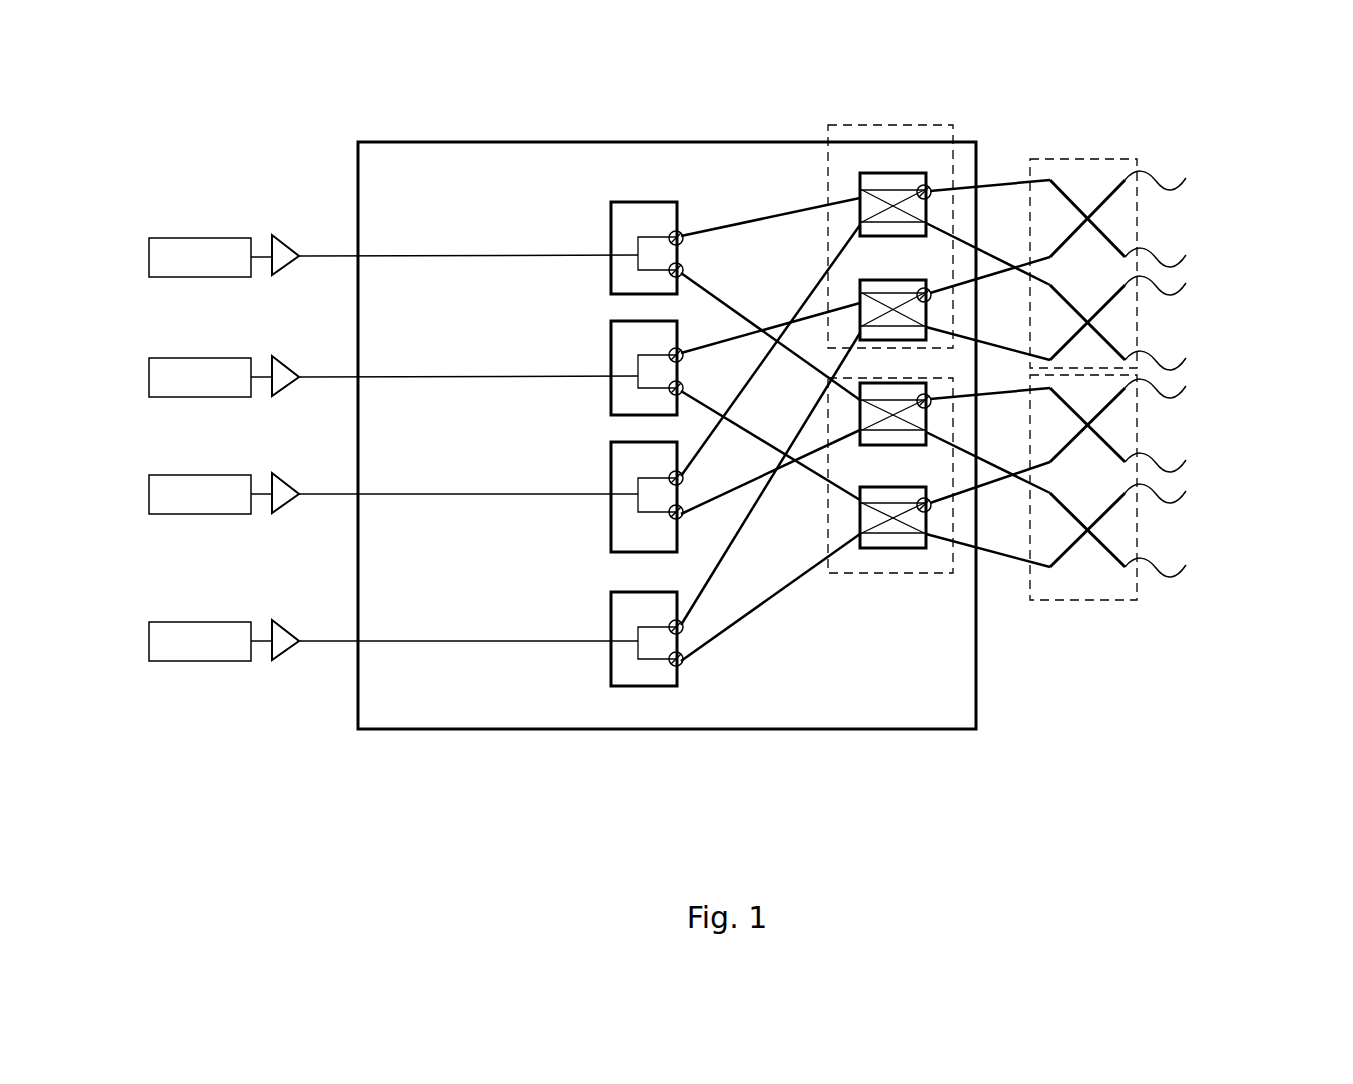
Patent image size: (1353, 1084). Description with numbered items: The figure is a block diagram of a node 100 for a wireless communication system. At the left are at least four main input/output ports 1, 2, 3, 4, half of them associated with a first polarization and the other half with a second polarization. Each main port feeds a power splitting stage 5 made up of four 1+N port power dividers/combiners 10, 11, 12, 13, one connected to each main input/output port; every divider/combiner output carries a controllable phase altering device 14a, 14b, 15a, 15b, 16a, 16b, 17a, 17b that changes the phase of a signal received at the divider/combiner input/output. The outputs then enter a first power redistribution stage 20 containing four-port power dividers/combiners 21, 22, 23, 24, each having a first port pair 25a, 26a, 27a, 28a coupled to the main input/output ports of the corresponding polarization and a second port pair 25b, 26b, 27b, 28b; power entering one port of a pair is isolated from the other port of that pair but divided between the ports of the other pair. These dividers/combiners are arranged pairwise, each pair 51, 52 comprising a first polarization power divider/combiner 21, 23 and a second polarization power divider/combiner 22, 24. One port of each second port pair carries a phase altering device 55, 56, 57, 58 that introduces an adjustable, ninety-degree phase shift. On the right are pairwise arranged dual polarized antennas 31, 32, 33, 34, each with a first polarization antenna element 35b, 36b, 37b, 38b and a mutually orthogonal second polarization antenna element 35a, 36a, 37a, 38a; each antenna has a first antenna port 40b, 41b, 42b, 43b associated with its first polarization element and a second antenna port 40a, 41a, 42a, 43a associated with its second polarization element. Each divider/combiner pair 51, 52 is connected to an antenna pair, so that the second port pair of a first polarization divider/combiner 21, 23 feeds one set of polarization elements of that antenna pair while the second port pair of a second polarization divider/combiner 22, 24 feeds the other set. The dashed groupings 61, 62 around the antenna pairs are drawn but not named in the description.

The node 100 is at (312, 113).
The main input/output port 1 is at (178, 238).
The main input/output port 2 is at (179, 358).
The main input/output port 3 is at (179, 475).
The main input/output port 4 is at (181, 622).
The power splitting stage 5 is at (641, 711).
The first power redistribution stage 20 is at (892, 707).
The power divider/combiner 10 is at (611, 226).
The power divider/combiner 11 is at (611, 340).
The power divider/combiner 12 is at (611, 462).
The power divider/combiner 13 is at (611, 607).
The controllable phase altering device 14a is at (681, 231).
The controllable phase altering device 14b is at (683, 266).
The controllable phase altering device 15a is at (681, 350).
The controllable phase altering device 15b is at (683, 383).
The controllable phase altering device 16a is at (681, 472).
The controllable phase altering device 16b is at (683, 507).
The controllable phase altering device 17a is at (681, 620).
The controllable phase altering device 17b is at (683, 653).
The first polarization power divider/combiner 21 is at (875, 182).
The second polarization power divider/combiner 22 is at (885, 288).
The first polarization power divider/combiner 23 is at (886, 391).
The second polarization power divider/combiner 24 is at (891, 495).
The first port pair 25a is at (842, 215).
The first port pair 26a is at (832, 296).
The first port pair 27a is at (832, 412).
The first port pair 28a is at (835, 538).
The second port pair 25b is at (933, 190).
The second port pair 26b is at (931, 291).
The second port pair 27b is at (931, 410).
The second port pair 28b is at (928, 526).
The pair of power dividers/combiners 51 is at (912, 124).
The pair of power dividers/combiners 52 is at (887, 575).
The phase altering device 55 is at (928, 188).
The phase altering device 56 is at (925, 290).
The phase altering device 57 is at (930, 397).
The phase altering device 58 is at (928, 500).
The first coupler group 61 is at (1090, 158).
The second coupler group 62 is at (1086, 600).
The second antenna port 40a is at (1046, 256).
The first antenna port 40b is at (1008, 181).
The second antenna port 41a is at (1002, 346).
The first antenna port 41b is at (1048, 284).
The second antenna port 42a is at (1050, 461).
The first antenna port 42b is at (995, 395).
The second antenna port 43a is at (1049, 566).
The first antenna port 43b is at (1006, 478).
The dual polarized antenna 31 is at (1152, 216).
The dual polarized antenna 32 is at (1155, 328).
The dual polarized antenna 33 is at (1152, 424).
The dual polarized antenna 34 is at (1157, 536).
The second polarization antenna element 35a is at (1179, 175).
The first polarization antenna element 35b is at (1181, 252).
The second polarization antenna element 36a is at (1180, 287).
The first polarization antenna element 36b is at (1181, 358).
The second polarization antenna element 37a is at (1181, 388).
The first polarization antenna element 37b is at (1181, 460).
The second polarization antenna element 38a is at (1181, 493).
The first polarization antenna element 38b is at (1181, 568).